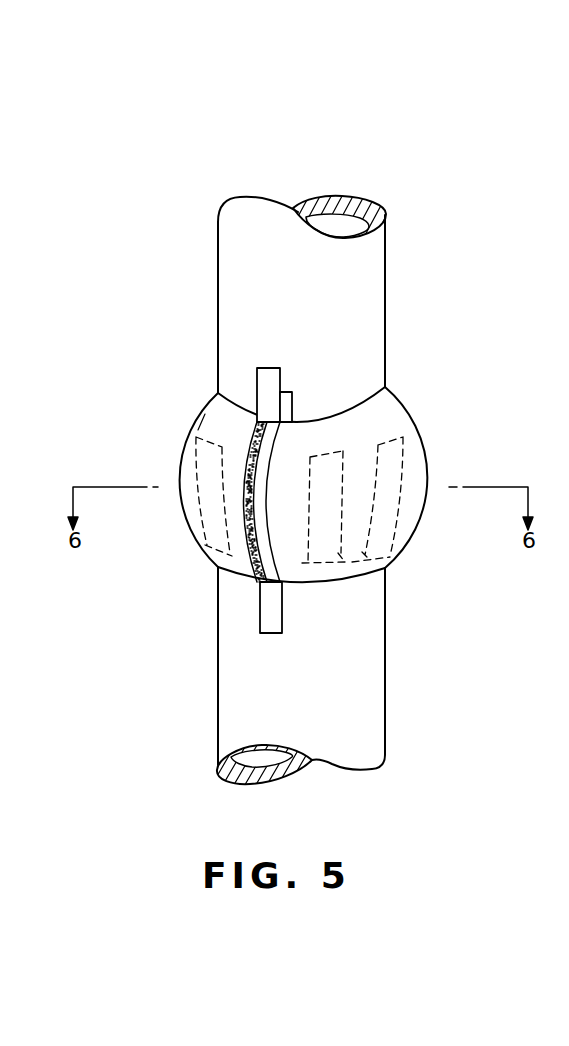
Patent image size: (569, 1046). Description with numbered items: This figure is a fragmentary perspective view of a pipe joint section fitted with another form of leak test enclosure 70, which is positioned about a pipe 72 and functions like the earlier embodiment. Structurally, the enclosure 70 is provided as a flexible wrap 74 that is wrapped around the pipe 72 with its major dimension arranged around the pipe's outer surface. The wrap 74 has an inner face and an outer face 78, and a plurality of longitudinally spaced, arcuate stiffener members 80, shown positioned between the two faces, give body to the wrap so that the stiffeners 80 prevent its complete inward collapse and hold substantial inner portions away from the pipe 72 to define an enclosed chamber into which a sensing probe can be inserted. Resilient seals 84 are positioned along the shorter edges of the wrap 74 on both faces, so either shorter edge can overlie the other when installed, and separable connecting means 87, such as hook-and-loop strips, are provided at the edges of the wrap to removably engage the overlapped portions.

The enclosure 70 is at (445, 436).
The pipe 72 is at (378, 332).
The flexible wrap 74 is at (428, 468).
The outer face 78 is at (203, 419).
The arcuate stiffener members 80 is at (405, 438).
The seals 84 is at (272, 567).
The separable connecting means 87 is at (252, 562).